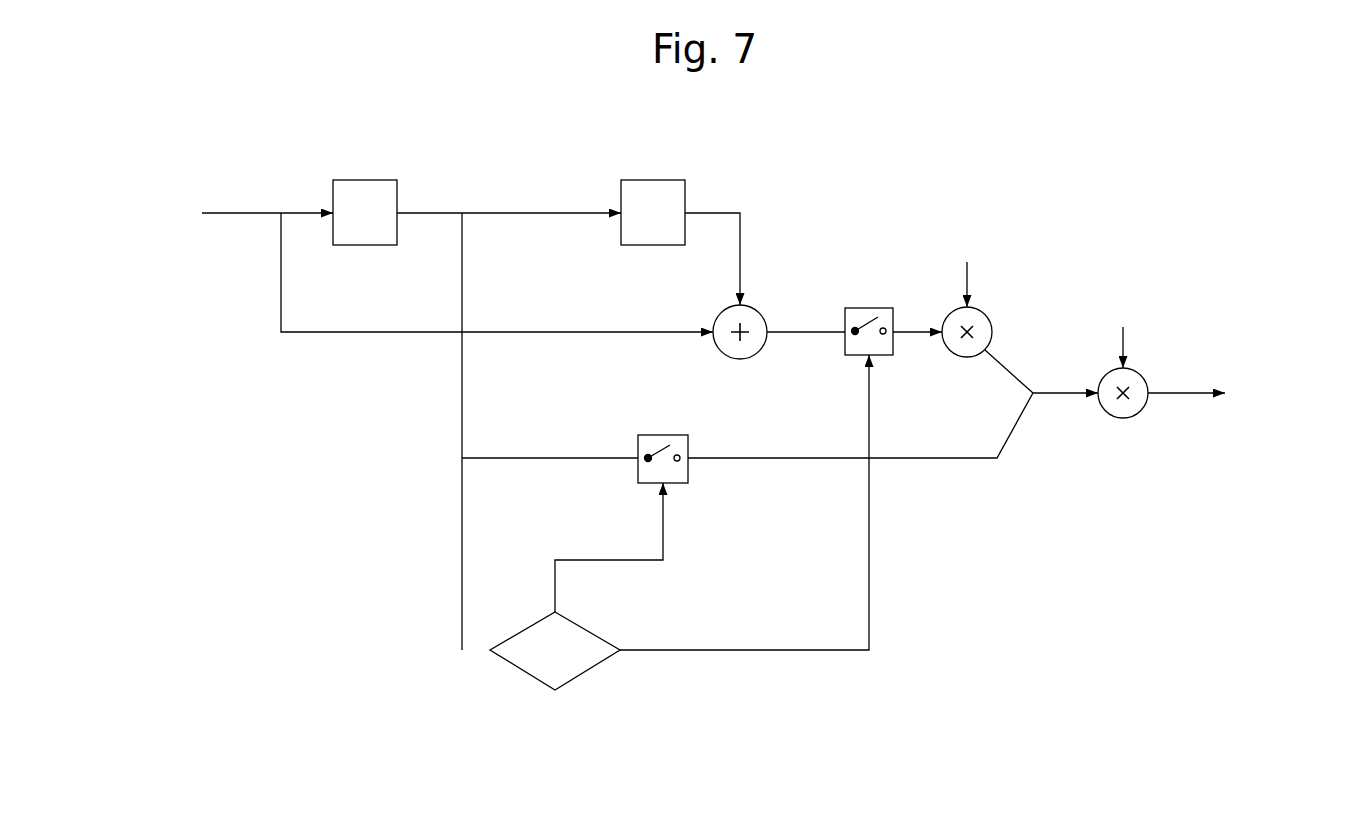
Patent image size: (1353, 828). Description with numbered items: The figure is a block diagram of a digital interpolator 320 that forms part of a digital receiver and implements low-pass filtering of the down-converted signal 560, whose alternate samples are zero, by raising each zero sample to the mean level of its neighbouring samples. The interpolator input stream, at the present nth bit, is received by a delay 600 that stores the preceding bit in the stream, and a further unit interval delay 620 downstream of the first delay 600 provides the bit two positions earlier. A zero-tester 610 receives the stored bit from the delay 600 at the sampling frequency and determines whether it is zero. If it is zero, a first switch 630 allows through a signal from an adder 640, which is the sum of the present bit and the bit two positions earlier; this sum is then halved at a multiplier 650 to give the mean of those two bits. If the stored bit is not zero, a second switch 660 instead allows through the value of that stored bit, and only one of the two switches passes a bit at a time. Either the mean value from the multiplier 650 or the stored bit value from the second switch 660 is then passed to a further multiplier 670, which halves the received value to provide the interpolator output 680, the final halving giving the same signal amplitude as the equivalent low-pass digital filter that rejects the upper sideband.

The digital interpolator 320 is at (207, 115).
The down-converted signal 560 is at (213, 213).
The delay 600 is at (365, 190).
The further unit interval delay 620 is at (648, 192).
The adder 640 is at (750, 343).
The first switch 630 is at (868, 313).
The multiplier 650 is at (958, 342).
The further multiplier 670 is at (1120, 417).
The interpolator output 680 is at (1192, 397).
The second switch 660 is at (653, 442).
The zero-tester 610 is at (540, 662).